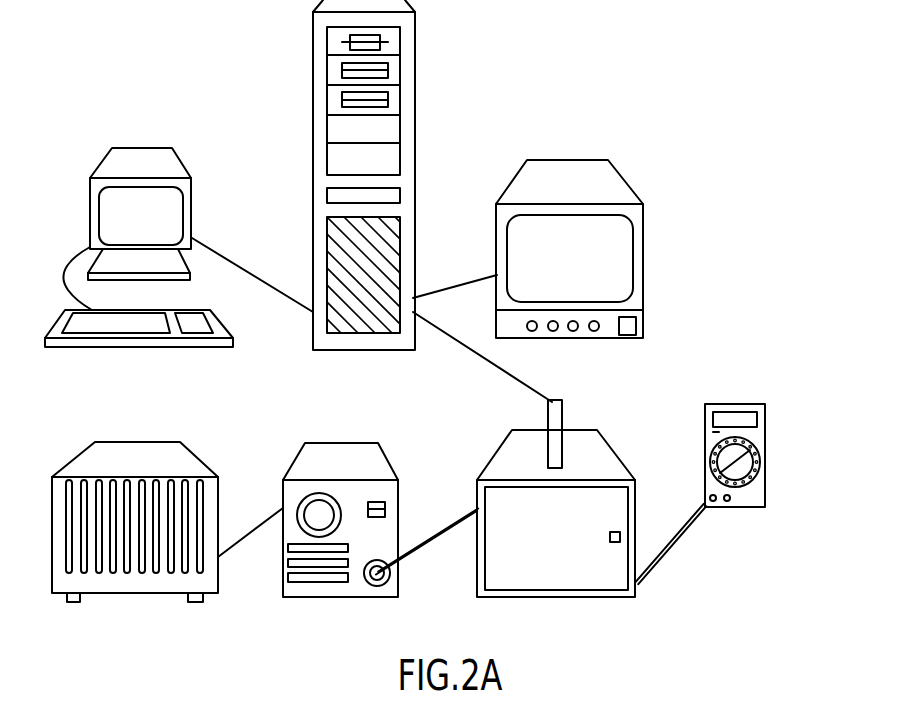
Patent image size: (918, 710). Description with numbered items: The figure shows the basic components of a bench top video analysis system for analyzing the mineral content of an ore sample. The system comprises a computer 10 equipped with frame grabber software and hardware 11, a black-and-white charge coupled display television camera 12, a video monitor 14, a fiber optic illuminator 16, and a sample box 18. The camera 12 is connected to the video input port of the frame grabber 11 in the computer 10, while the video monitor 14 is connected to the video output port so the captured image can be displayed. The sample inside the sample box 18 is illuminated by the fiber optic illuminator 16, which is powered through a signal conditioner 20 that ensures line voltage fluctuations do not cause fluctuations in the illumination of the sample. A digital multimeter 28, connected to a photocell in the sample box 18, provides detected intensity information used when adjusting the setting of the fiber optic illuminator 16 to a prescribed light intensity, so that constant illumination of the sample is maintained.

The computer 10 is at (262, 149).
The frame grabber software and hardware 11 is at (413, 180).
The charge coupled display television camera 12 is at (547, 423).
The video monitor 14 is at (592, 160).
The fiber optic illuminator 16 is at (375, 452).
The sample box 18 is at (637, 594).
The signal conditioner 20 is at (187, 453).
The digital multimeter 28 is at (763, 442).